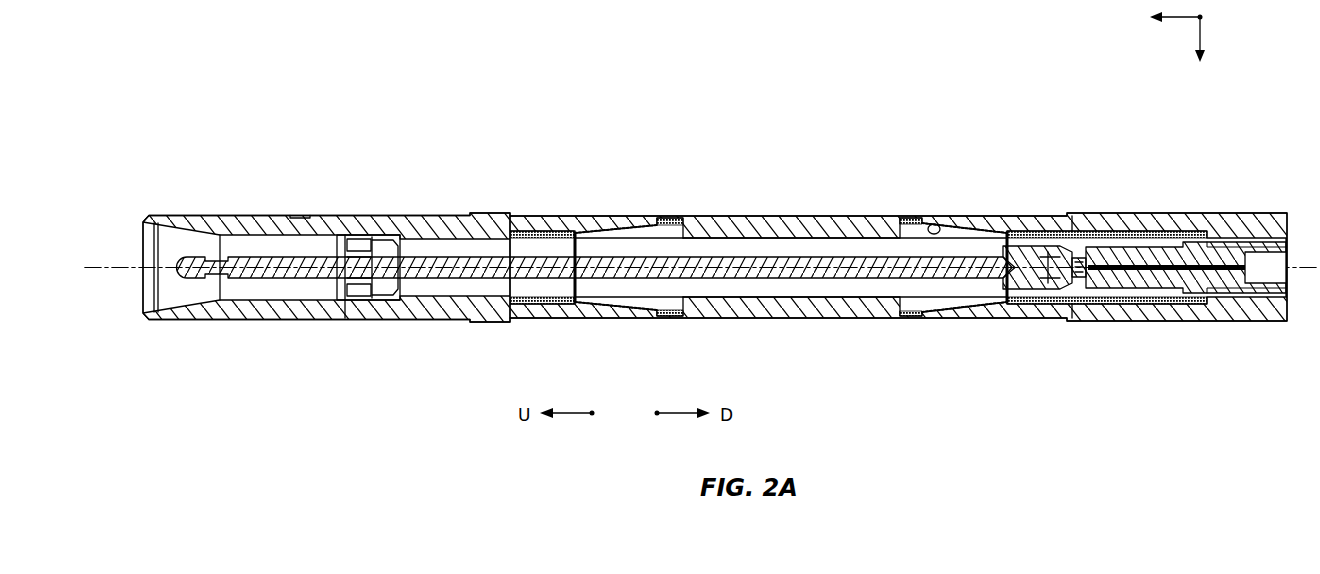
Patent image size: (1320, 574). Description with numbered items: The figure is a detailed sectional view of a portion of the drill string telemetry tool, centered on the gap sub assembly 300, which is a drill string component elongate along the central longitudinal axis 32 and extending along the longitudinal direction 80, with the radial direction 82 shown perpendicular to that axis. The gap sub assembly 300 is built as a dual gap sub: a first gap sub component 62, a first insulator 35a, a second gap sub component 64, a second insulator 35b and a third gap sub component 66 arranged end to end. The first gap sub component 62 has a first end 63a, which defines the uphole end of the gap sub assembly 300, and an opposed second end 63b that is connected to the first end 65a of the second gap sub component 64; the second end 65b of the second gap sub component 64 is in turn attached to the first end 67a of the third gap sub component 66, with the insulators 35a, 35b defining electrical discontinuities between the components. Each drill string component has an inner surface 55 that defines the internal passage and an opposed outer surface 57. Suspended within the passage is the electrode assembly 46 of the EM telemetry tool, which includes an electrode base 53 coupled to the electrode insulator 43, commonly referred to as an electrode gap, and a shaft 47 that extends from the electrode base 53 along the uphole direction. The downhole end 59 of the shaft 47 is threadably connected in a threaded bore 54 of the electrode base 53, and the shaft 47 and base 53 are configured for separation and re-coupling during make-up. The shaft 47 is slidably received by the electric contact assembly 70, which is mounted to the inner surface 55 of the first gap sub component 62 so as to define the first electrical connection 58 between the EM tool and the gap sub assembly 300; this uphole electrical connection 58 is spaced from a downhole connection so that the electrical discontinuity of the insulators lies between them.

The gap sub assembly 300 is at (262, 155).
The central longitudinal axis 32 is at (118, 268).
The first insulator 35a is at (668, 220).
The second insulator 35b is at (908, 220).
The electrode insulator 43 is at (1166, 240).
The electrode assembly 46 is at (893, 287).
The shaft 47 is at (447, 276).
The electrode base 53 is at (1068, 290).
The threaded bore 54 is at (1042, 256).
The inner surface 55 is at (283, 240).
The outer surface 57 is at (383, 233).
The first electrical connection 58 is at (357, 233).
The downhole end 59 is at (1010, 250).
The first gap sub component 62 is at (478, 308).
The first end 63a is at (150, 219).
The second end 63b is at (610, 228).
The second gap sub component 64 is at (704, 318).
The first end 65a is at (654, 222).
The second end 65b is at (925, 225).
The third gap sub component 66 is at (1040, 308).
The first end 67a is at (935, 224).
The electric contact assembly 70 is at (348, 312).
The longitudinal direction 80 is at (1160, 19).
The radial direction 82 is at (1201, 59).